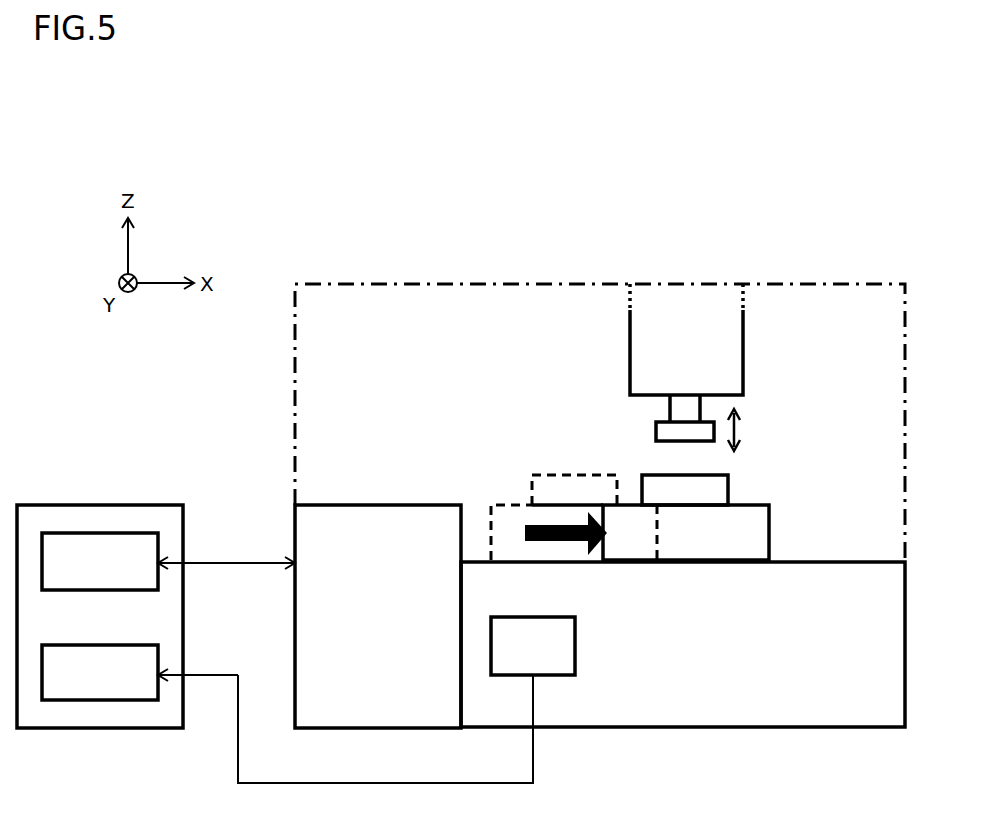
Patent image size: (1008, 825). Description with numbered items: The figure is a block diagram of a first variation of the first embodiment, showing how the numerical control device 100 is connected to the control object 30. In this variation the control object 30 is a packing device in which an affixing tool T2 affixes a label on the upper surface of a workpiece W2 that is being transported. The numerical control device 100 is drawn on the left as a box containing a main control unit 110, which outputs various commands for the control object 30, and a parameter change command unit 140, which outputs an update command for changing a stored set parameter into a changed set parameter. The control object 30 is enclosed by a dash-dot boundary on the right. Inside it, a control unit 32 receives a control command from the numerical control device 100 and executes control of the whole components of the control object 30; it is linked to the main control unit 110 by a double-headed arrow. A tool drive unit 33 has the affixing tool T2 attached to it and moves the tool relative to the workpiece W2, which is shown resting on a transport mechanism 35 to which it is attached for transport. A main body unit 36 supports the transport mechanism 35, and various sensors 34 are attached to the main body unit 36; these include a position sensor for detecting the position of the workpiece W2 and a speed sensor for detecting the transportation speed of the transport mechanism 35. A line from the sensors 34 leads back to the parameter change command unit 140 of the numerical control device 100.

The control object 30 is at (793, 283).
The control unit 32 is at (377, 505).
The tool drive unit 33 is at (630, 355).
The sensors 34 is at (545, 676).
The transport mechanism 35 is at (770, 543).
The main body unit 36 is at (698, 662).
The numerical control device 100 is at (70, 505).
The main control unit 110 is at (128, 533).
The parameter change command unit 140 is at (100, 700).
The workpiece W2 is at (728, 492).
The affixing tool T2 is at (655, 430).